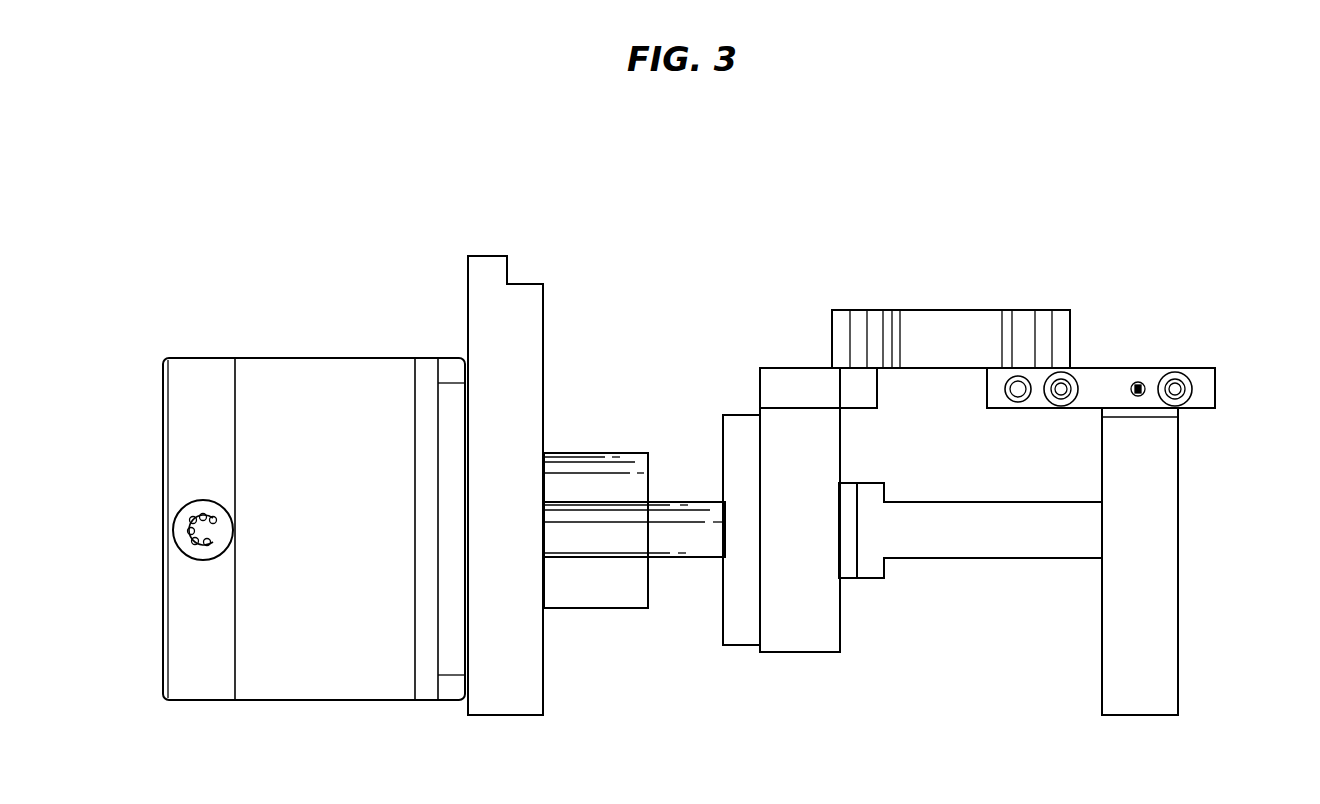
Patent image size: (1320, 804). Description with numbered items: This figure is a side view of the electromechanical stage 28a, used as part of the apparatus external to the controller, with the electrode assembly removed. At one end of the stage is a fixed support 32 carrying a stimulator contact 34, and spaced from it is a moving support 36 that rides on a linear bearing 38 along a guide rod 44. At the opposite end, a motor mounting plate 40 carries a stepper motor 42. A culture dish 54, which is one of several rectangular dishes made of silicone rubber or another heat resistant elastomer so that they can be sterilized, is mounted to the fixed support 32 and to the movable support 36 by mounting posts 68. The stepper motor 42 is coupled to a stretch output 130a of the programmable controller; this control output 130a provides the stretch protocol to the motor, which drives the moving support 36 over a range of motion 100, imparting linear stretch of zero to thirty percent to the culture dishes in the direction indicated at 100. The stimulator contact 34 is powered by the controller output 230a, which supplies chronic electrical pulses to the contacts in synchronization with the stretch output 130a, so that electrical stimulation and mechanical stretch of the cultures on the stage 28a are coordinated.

The stepper motor 42 is at (257, 356).
The stretch output 130a is at (191, 503).
The motor mounting plate 40 is at (498, 716).
The guide rod 44 is at (686, 502).
The linear bearing 38 is at (731, 634).
The moving support 36 is at (798, 652).
The culture dish 54 is at (950, 308).
The mounting posts 68 is at (854, 308).
The range of motion 100 is at (832, 272).
The stimulator contact 34 is at (1215, 390).
The controller output 230a is at (1020, 402).
The fixed support 32 is at (1178, 688).
The electromechanical stage 28a is at (1199, 356).